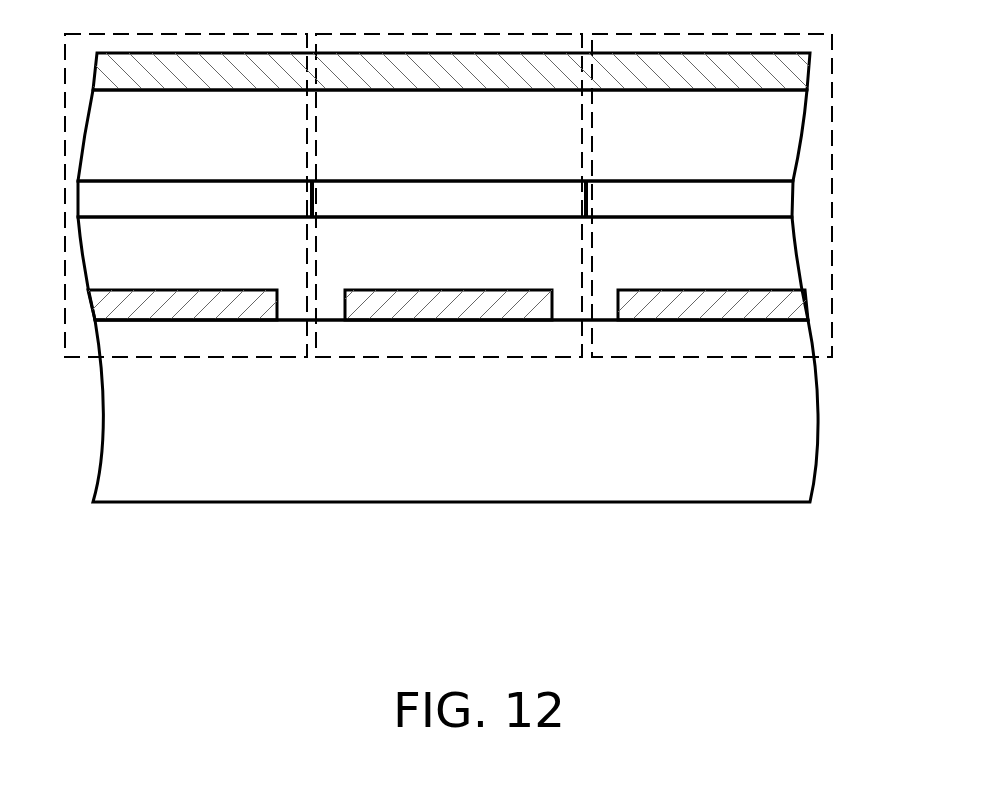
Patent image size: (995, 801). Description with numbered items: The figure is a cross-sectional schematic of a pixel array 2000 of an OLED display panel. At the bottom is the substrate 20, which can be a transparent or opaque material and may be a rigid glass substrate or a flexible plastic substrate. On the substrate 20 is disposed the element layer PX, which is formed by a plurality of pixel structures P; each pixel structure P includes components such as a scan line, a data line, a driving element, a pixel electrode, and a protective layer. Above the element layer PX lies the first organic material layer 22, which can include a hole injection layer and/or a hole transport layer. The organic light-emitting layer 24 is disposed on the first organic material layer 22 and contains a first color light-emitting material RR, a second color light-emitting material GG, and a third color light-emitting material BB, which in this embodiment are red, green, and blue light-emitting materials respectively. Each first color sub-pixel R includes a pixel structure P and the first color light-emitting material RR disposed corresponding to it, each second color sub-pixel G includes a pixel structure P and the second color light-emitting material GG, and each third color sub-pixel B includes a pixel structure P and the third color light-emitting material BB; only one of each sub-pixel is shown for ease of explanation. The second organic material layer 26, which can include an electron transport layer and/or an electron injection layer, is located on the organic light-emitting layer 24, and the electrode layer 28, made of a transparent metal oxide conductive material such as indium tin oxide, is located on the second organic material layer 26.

The electrode layer 28 is at (782, 73).
The second organic material layer 26 is at (780, 137).
The organic light-emitting layer 24 is at (485, 199).
The first organic material layer 22 is at (782, 252).
The substrate 20 is at (780, 430).
The element layer PX is at (459, 281).
The pixel structure P is at (140, 305).
The first color light-emitting material RR is at (207, 200).
The second color light-emitting material GG is at (450, 200).
The third color light-emitting material BB is at (697, 200).
The first color sub-pixel R is at (165, 357).
The second color sub-pixel G is at (433, 357).
The third color sub-pixel B is at (688, 357).
The pixel array 2000 is at (897, 609).